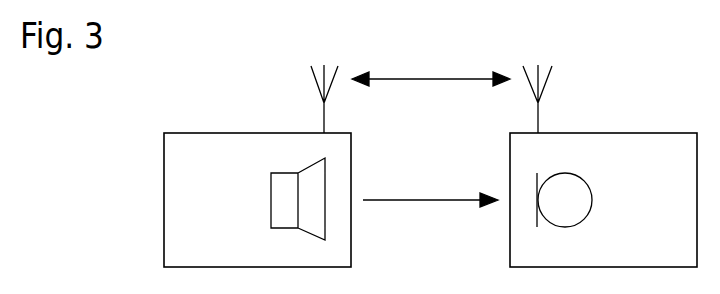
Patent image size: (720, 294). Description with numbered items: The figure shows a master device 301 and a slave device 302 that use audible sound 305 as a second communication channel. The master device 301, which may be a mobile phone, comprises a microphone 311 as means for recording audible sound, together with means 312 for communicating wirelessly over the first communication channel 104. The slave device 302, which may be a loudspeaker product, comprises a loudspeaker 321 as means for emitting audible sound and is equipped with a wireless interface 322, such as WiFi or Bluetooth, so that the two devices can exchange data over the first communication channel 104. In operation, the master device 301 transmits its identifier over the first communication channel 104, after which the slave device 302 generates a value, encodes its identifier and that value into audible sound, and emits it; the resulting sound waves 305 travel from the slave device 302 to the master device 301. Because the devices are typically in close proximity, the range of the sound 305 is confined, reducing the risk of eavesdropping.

The slave device 302 is at (192, 133).
The master device 301 is at (657, 133).
The wireless interface 322 is at (319, 65).
The means for communicating wirelessly 312 is at (544, 65).
The first communication channel 104 is at (430, 79).
The audible sound 305 is at (443, 200).
The loudspeaker 321 is at (271, 192).
The microphone 311 is at (592, 200).